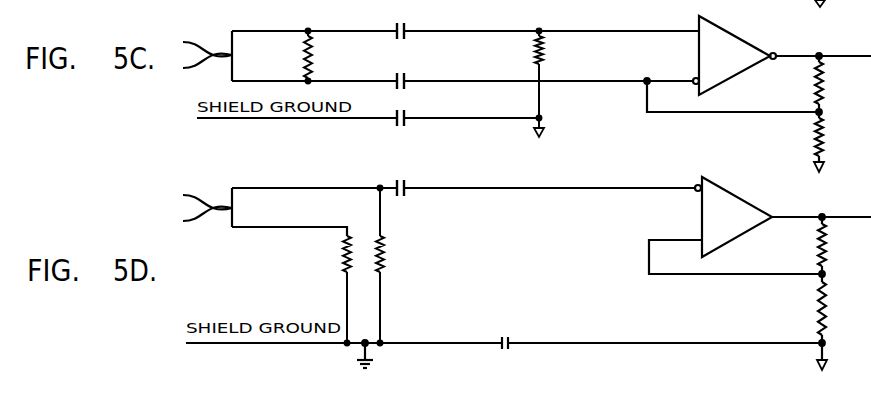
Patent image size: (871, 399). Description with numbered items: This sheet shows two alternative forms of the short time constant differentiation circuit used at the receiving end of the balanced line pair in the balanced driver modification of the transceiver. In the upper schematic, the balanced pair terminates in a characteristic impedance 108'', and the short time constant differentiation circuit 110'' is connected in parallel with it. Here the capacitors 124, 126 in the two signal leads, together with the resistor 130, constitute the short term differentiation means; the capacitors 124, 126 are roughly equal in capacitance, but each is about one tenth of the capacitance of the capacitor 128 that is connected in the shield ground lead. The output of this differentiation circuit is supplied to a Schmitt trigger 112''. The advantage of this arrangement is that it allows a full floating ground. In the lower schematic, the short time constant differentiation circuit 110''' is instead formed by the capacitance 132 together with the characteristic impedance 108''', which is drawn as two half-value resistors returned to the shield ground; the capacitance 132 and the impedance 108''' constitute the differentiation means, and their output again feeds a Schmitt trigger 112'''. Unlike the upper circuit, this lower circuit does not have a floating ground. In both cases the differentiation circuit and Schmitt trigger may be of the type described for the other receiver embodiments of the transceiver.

In FIG. 5C, the short time constant differentiation circuit 110'' is at (334, 44).
In FIG. 5C, the characteristic impedance 108'' is at (334, 57).
In FIG. 5C, the capacitor 124 is at (403, 22).
In FIG. 5C, the capacitor 126 is at (403, 68).
In FIG. 5C, the capacitor 128 is at (403, 110).
In FIG. 5C, the resistor 130 is at (544, 55).
In FIG. 5C, the Schmitt trigger 112'' is at (757, 86).
In FIG. 5D, the capacitance 132 is at (403, 179).
In FIG. 5D, the short time constant differentiation circuit 110''' is at (418, 205).
In FIG. 5D, the characteristic impedance 108''' is at (359, 267).
In FIG. 5D, the Schmitt trigger 112''' is at (760, 273).